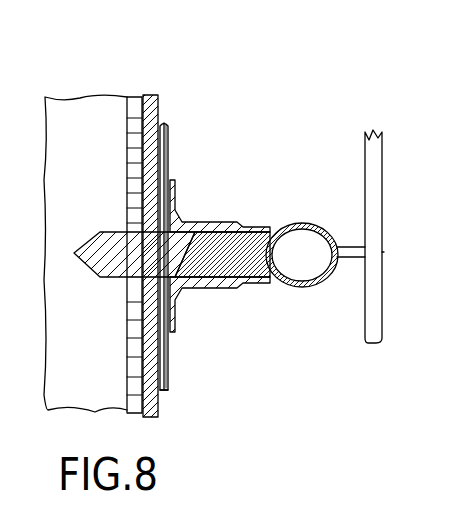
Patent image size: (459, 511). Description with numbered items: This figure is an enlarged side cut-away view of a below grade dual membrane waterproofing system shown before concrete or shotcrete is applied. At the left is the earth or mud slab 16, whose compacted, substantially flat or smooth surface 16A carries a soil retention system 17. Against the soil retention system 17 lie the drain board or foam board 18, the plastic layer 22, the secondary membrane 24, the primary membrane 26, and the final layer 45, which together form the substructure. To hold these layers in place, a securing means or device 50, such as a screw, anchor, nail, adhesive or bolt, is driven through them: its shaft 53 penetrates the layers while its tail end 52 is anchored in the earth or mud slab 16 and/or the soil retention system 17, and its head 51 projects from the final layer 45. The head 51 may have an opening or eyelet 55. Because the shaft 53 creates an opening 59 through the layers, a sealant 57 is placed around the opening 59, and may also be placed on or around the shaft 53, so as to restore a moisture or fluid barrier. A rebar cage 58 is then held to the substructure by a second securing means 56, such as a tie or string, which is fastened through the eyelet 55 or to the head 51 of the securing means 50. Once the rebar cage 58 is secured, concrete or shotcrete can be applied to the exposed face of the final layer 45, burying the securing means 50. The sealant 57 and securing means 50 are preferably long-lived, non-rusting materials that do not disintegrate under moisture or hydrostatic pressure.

The earth or mud slab 16 is at (63, 125).
The flat or smooth surface 16A is at (120, 130).
The soil retention system 17 is at (132, 100).
The drain board or foam board 18 is at (147, 97).
The secondary membrane 24 is at (163, 127).
The primary membrane 26 is at (163, 133).
The final layer 45 is at (167, 153).
The sealant 57 is at (177, 197).
The tail end 52 is at (97, 253).
The shaft 53 is at (183, 249).
The opening 59 is at (150, 232).
The plastic layer 22 is at (163, 367).
The securing means or device 50 is at (290, 223).
The head 51 is at (323, 225).
The opening or eyelet 55 is at (313, 262).
The securing means (tie or string) 56 is at (384, 254).
The rebar cage 58 is at (375, 165).